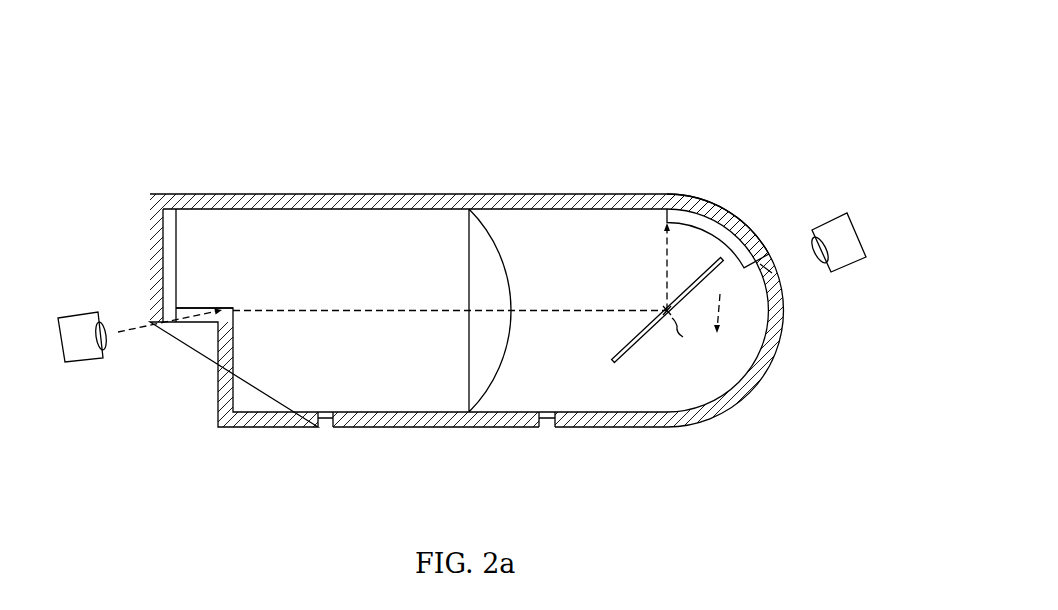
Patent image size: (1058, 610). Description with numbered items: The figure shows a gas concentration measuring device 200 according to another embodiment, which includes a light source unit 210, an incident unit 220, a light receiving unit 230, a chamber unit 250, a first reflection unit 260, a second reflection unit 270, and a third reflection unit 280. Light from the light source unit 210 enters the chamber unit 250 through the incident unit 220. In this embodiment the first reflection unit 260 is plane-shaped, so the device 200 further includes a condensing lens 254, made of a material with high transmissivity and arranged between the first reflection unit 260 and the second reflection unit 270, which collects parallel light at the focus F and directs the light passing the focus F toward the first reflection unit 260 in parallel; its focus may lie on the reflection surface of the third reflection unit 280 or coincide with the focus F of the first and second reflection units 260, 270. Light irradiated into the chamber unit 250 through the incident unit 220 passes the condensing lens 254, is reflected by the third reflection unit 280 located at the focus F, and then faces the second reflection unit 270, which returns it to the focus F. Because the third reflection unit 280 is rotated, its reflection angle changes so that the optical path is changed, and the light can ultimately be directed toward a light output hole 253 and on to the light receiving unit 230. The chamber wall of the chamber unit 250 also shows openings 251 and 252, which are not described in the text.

The gas concentration measuring device 200 is at (928, 43).
The light source unit 210 is at (66, 362).
The incident unit 220 is at (186, 318).
The light receiving unit 230 is at (858, 232).
The chamber unit 250 is at (583, 200).
The first vent slot 251 is at (326, 432).
The second vent slot 252 is at (548, 432).
The light output hole 253 is at (772, 266).
The condensing lens 254 is at (488, 250).
The first reflection unit 260 is at (172, 218).
The second reflection unit 270 is at (759, 225).
The third reflection unit 280 is at (640, 345).